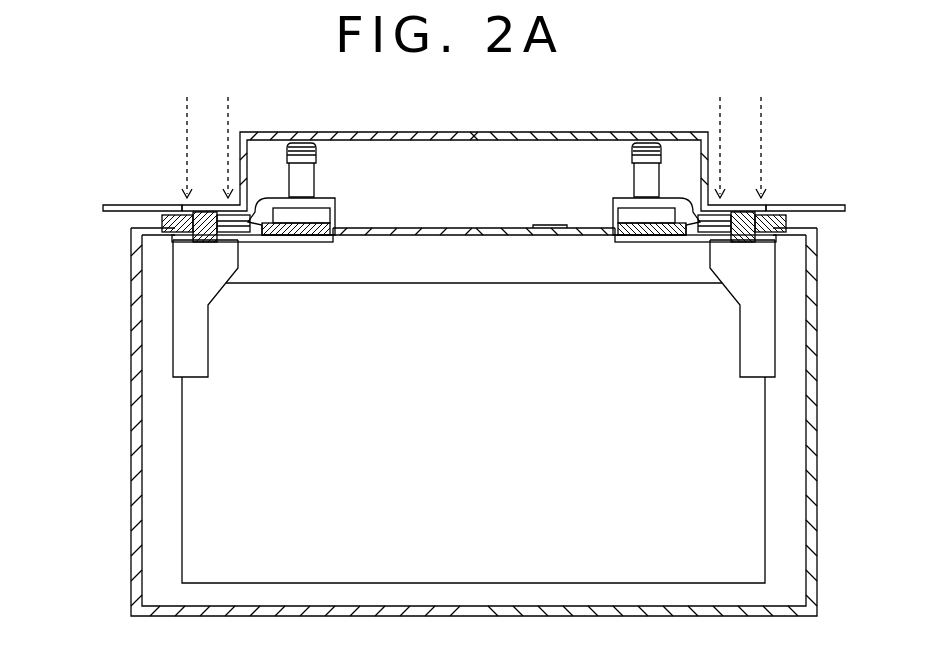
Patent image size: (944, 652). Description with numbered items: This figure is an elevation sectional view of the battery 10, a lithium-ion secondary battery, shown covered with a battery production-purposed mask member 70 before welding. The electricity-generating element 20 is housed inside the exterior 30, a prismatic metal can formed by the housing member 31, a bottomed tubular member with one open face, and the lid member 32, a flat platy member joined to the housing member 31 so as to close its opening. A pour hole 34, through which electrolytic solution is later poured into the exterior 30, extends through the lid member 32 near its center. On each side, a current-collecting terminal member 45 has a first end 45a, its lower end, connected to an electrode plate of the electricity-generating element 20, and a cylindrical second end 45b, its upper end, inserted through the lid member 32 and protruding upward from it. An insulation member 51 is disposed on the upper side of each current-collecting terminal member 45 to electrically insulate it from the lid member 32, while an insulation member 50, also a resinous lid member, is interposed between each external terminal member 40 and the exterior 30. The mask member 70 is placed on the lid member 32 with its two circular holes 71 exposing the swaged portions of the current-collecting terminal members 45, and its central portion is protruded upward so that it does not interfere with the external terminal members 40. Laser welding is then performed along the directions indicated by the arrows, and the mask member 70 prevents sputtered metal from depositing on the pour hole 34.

The battery 10 is at (96, 593).
The electricity-generating element 20 is at (208, 438).
The exterior 30 is at (66, 162).
The housing member 31 is at (130, 265).
The lid member 32 is at (132, 212).
The pour hole 34 is at (547, 232).
The external terminal member 40 is at (305, 190).
The current-collecting terminal member 45 is at (231, 301).
The first end of current-collecting terminal member 45a is at (193, 349).
The second end of current-collecting terminal member 45b is at (239, 268).
The insulation member 50 is at (338, 225).
The insulation member 51 is at (243, 240).
The battery production-purposed mask member 70 is at (520, 132).
The circular hole 71 is at (185, 207).